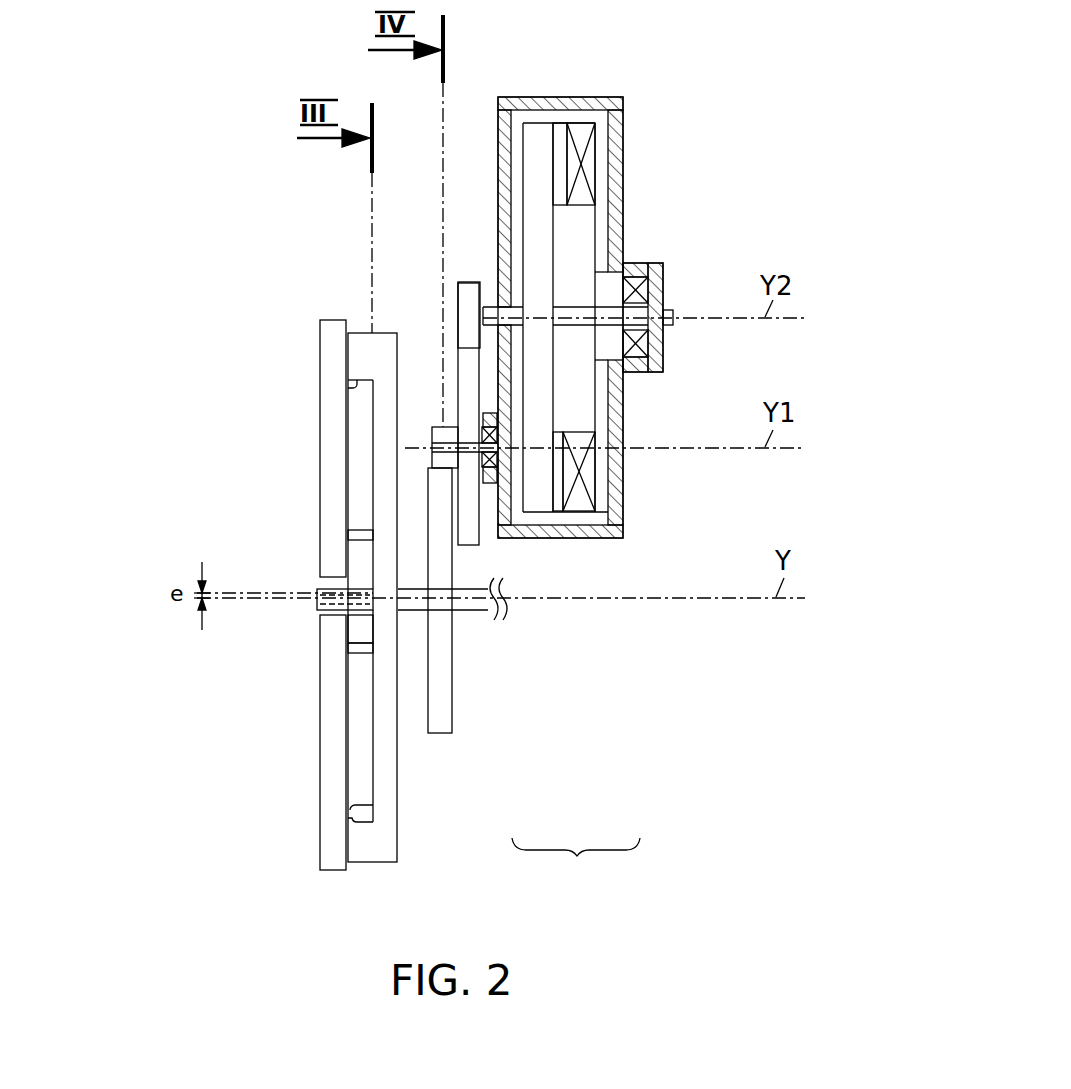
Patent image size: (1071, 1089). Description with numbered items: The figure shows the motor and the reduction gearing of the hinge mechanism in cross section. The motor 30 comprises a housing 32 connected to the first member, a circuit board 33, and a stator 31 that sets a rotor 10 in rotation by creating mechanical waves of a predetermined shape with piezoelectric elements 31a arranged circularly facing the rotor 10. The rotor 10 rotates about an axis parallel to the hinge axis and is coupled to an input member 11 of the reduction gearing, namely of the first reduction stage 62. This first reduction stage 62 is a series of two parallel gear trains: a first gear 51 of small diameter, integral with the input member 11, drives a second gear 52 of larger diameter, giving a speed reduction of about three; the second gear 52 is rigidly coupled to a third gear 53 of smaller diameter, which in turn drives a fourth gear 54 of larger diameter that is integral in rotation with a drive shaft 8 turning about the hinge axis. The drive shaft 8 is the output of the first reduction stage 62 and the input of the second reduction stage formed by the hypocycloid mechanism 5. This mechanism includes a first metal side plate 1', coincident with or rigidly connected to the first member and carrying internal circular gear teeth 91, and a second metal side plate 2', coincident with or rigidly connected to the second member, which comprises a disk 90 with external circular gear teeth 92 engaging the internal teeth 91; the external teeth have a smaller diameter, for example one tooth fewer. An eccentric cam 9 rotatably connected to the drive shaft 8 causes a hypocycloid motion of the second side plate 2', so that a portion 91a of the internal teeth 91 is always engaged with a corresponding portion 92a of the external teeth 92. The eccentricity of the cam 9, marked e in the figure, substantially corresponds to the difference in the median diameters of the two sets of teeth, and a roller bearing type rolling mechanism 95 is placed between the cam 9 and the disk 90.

The motor 30 is at (565, 93).
The housing 32 is at (513, 98).
The circuit board 33 is at (603, 243).
The rotor 10 is at (535, 483).
The stator 31 is at (582, 138).
The piezoelectric elements 31a is at (558, 187).
The input member 11 is at (497, 303).
The first gear 51 is at (467, 288).
The second gear 52 is at (465, 360).
The third gear 53 is at (437, 437).
The fourth gear 54 is at (447, 733).
The drive shaft 8 is at (463, 607).
The first side plate 1' is at (357, 544).
The second side plate 2' is at (279, 595).
The disk 90 is at (355, 712).
The eccentric cam 9 is at (358, 620).
The rolling mechanism 95 is at (355, 647).
The portion of the external teeth 92a is at (350, 383).
The portion of the internal teeth 91a is at (351, 383).
The external circular gear teeth 92 is at (353, 806).
The internal circular gear teeth 91 is at (358, 820).
The hypocycloid mechanism 5 is at (455, 790).
The first reduction stage 62 is at (515, 618).